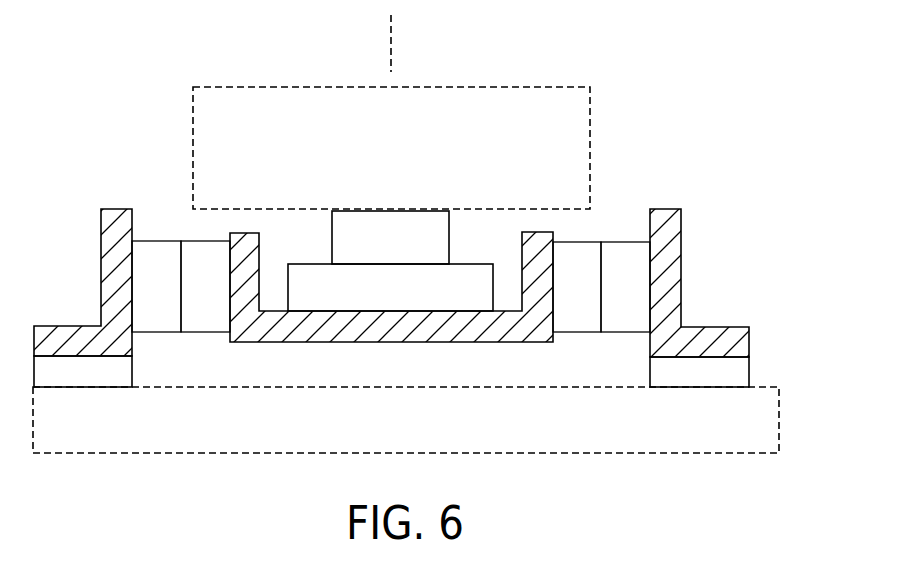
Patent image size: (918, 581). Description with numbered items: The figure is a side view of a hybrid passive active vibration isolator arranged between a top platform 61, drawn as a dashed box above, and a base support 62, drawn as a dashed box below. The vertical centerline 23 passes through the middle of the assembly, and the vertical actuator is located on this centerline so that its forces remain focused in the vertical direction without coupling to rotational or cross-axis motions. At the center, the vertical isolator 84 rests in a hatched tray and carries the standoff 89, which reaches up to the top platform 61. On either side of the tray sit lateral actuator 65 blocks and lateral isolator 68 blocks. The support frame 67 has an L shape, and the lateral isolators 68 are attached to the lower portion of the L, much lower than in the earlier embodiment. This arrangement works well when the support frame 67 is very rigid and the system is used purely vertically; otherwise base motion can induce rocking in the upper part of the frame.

The vertical centerline 23 is at (393, 42).
The top platform 61 is at (567, 97).
The base support 62 is at (695, 442).
The lateral actuator 65 is at (565, 302).
The support frame 67 is at (673, 272).
The lateral isolator 68 is at (613, 302).
The vertical isolator 84 is at (378, 302).
The standoff 89 is at (378, 250).